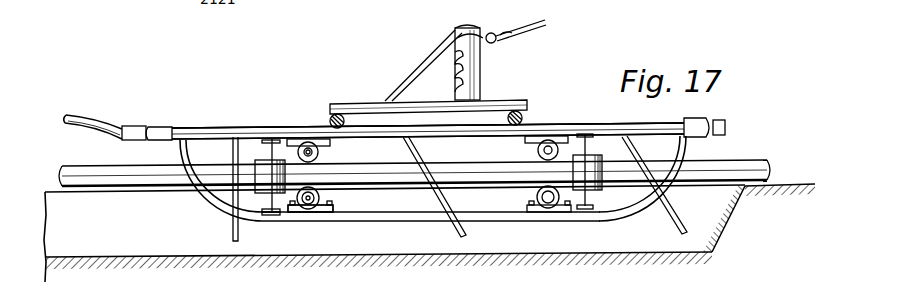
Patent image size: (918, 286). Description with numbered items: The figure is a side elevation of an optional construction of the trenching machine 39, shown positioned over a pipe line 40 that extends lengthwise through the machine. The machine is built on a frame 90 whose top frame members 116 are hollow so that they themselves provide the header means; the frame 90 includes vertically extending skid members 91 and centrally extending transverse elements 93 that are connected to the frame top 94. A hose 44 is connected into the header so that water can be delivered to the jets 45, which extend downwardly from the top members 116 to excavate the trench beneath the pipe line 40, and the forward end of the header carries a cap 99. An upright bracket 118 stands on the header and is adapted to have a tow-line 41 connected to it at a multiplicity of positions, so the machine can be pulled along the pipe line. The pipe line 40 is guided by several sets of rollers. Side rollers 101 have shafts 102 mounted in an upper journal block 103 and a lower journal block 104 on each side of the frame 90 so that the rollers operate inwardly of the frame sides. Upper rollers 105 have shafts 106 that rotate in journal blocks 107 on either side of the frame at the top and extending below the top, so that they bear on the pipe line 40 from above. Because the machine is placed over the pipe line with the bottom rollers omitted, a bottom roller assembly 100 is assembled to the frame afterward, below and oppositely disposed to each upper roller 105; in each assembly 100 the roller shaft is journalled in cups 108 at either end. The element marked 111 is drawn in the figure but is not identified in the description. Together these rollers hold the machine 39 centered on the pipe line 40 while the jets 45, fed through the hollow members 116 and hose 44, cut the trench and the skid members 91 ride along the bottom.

The trenching machine 39 is at (607, 100).
The pipe line 40 is at (118, 176).
The tow-line 41 is at (547, 20).
The hose 44 is at (91, 130).
The jets 45 is at (460, 228).
The frame 90 is at (503, 146).
The skid members 91 is at (513, 215).
The transverse elements 93 is at (522, 120).
The frame top 94 is at (233, 129).
The cap 99 is at (727, 128).
The bottom roller assembly 100 is at (322, 201).
The side rollers 101 is at (428, 174).
The shafts 102 is at (266, 204).
The upper journal block 103 is at (268, 139).
The lower journal block 104 is at (276, 212).
The upper rollers 105 is at (320, 155).
The shafts 106 is at (310, 150).
The journal blocks 107 is at (344, 125).
The cups 108 is at (310, 204).
The roller bracket 111 is at (362, 224).
The top frame members 116 is at (297, 131).
The upright bracket 118 is at (480, 75).